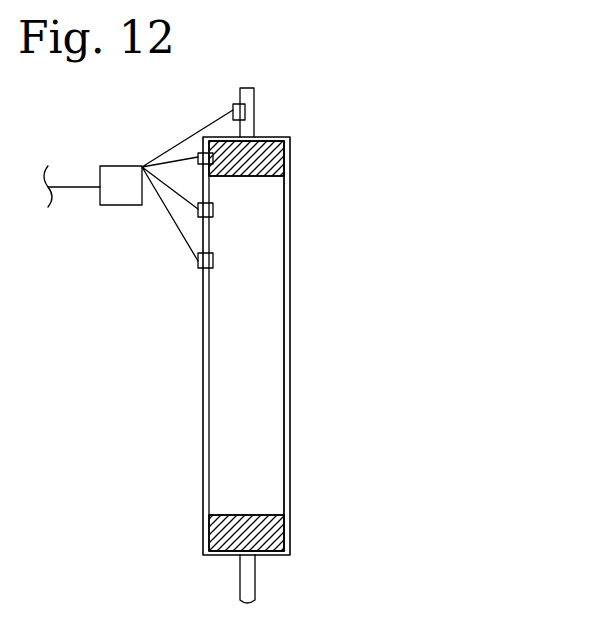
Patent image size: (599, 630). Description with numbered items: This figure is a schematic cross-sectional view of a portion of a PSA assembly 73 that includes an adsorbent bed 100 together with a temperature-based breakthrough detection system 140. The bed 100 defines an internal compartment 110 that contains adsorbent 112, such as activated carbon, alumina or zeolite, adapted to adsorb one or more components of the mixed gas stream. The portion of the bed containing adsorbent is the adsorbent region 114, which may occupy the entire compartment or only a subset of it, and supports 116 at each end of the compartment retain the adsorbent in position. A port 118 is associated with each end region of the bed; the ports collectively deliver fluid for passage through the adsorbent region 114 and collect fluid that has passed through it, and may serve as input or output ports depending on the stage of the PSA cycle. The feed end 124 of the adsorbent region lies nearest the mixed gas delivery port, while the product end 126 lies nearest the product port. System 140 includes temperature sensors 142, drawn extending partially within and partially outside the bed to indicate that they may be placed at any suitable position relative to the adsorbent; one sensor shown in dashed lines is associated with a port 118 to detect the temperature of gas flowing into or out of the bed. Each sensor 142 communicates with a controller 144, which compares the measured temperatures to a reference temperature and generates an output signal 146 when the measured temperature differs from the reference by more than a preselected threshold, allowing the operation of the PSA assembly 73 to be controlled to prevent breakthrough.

The PSA assembly 73 is at (411, 119).
The adsorbent bed 100 is at (361, 141).
The internal compartment 110 is at (292, 520).
The adsorbent 112 is at (265, 400).
The adsorbent region 114 is at (266, 372).
The supports 116 is at (267, 160).
The port 118 is at (255, 104).
The feed end of the adsorbent region 124 is at (246, 520).
The product end of the adsorbent region 126 is at (256, 170).
The temperature-based breakthrough detection system 140 is at (82, 163).
The temperature sensor 142 is at (237, 106).
The controller 144 is at (122, 166).
The output signal 146 is at (63, 187).